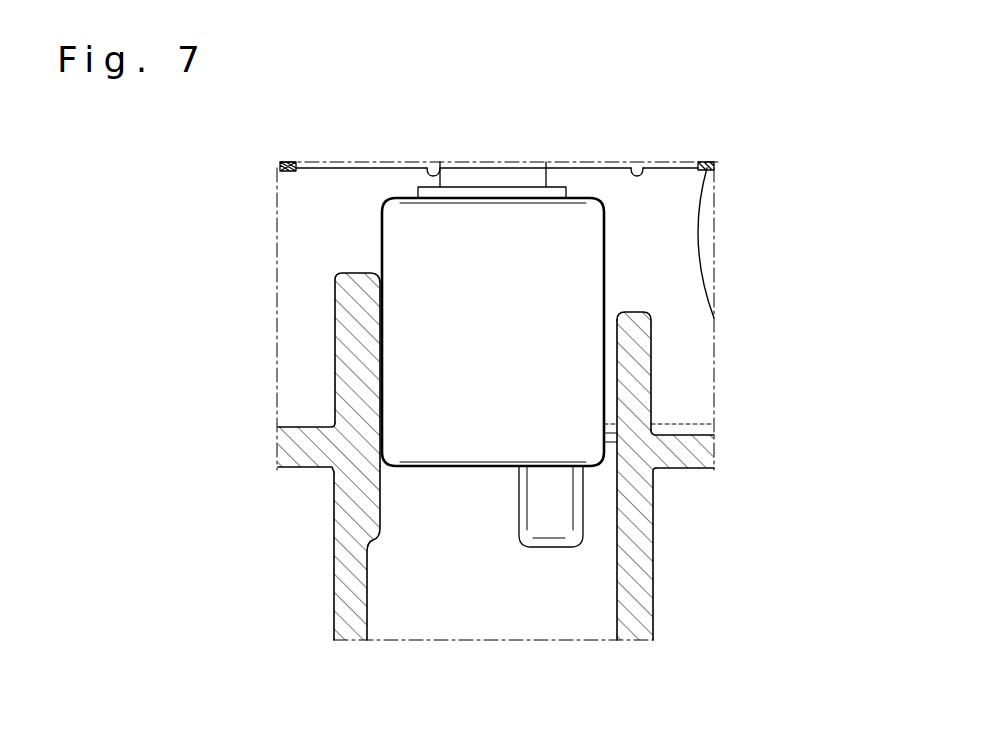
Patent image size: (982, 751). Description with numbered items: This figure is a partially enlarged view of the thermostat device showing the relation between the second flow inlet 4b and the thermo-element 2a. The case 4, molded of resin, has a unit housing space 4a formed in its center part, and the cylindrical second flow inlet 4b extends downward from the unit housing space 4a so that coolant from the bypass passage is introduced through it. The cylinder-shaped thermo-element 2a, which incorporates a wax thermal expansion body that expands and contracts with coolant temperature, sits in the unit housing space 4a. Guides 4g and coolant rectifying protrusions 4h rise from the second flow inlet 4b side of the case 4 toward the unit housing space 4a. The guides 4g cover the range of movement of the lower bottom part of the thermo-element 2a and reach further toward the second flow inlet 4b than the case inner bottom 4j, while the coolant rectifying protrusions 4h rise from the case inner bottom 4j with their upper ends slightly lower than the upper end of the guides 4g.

The thermo-element 2a is at (587, 233).
The case 4 is at (494, 456).
The unit housing space 4a is at (682, 278).
The second flow inlet 4b is at (488, 605).
The guide 4g is at (350, 337).
The coolant rectifying protrusion 4h is at (637, 355).
The case inner bottom 4j is at (682, 428).